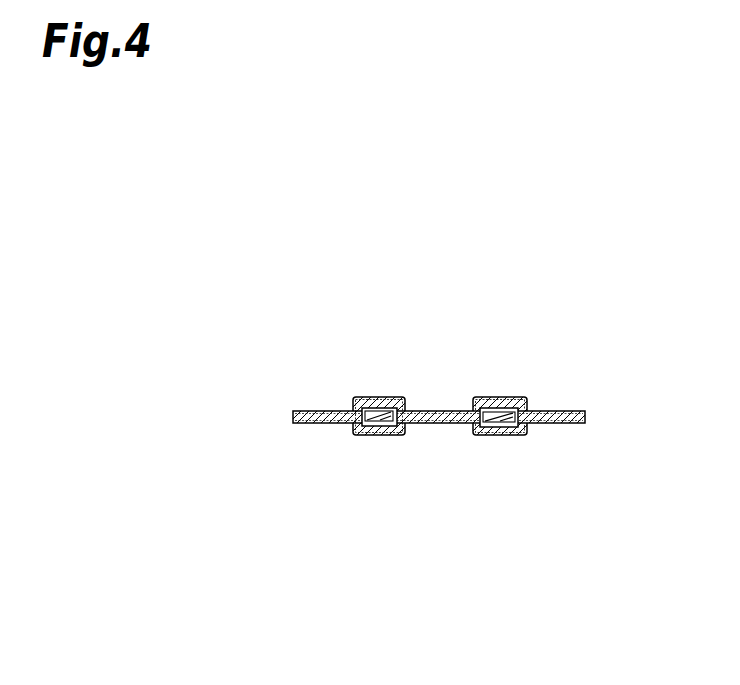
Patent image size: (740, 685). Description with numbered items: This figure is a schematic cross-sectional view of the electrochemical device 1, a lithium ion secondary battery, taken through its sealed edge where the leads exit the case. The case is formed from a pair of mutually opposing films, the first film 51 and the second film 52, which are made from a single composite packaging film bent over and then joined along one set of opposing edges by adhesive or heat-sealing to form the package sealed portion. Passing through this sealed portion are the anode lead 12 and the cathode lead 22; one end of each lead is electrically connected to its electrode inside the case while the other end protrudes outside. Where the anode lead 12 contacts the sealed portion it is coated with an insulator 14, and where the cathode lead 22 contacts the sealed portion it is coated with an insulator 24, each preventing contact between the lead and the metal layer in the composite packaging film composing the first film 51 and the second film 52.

The electrochemical device 1 is at (577, 289).
The anode lead 12 is at (390, 433).
The insulator 14 is at (361, 433).
The cathode lead 22 is at (483, 433).
The insulator 24 is at (525, 434).
The first film 51 is at (520, 398).
The second film 52 is at (522, 434).